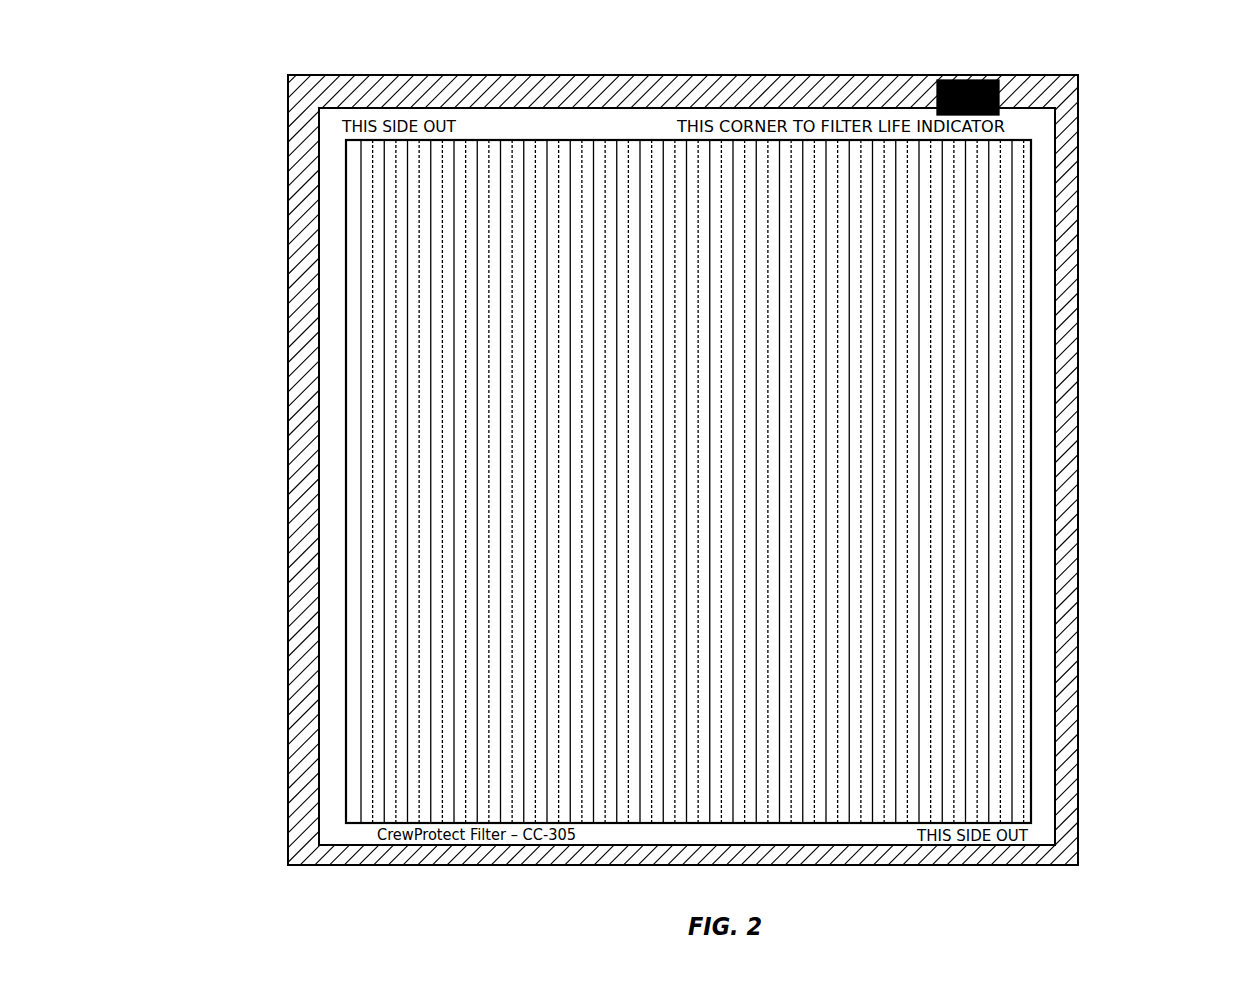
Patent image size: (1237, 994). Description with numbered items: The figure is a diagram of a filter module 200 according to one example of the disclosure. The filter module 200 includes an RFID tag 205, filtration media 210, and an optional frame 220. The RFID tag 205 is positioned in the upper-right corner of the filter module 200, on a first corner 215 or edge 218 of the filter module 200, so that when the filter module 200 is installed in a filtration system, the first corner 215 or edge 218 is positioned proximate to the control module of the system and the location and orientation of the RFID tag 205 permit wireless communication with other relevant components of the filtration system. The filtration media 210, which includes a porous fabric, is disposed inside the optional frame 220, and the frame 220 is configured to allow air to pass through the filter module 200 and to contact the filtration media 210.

The filter module 200 is at (192, 99).
The RFID tag 205 is at (1002, 97).
The filtration media 210 is at (965, 607).
The first corner 215 is at (1080, 77).
The edge 218 is at (1016, 51).
The frame 220 is at (286, 666).